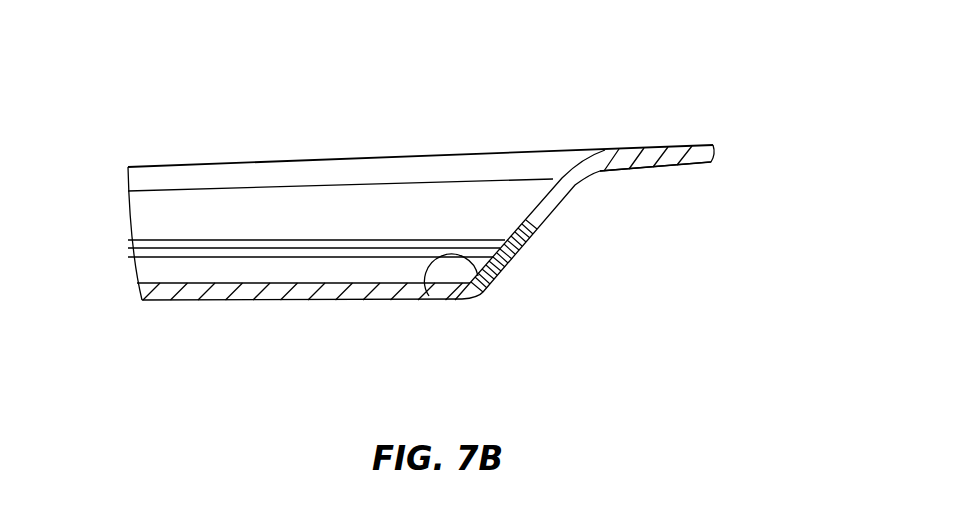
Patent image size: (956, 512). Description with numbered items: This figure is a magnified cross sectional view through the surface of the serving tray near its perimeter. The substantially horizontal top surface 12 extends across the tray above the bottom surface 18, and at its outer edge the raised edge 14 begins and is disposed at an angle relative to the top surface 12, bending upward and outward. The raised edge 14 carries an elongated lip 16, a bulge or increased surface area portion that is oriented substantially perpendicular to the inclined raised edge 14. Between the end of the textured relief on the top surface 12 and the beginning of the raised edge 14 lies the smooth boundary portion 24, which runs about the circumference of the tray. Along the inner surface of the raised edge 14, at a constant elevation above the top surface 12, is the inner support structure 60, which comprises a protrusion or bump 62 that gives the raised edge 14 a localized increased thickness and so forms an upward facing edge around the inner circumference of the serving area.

The top surface 12 is at (220, 283).
The raised edge 14 is at (342, 207).
The inner support structure 60 is at (403, 243).
The protrusion or bump 62 is at (497, 240).
The elongated lip 16 is at (667, 147).
The bottom surface 18 is at (287, 300).
The smooth boundary portion 24 is at (440, 282).